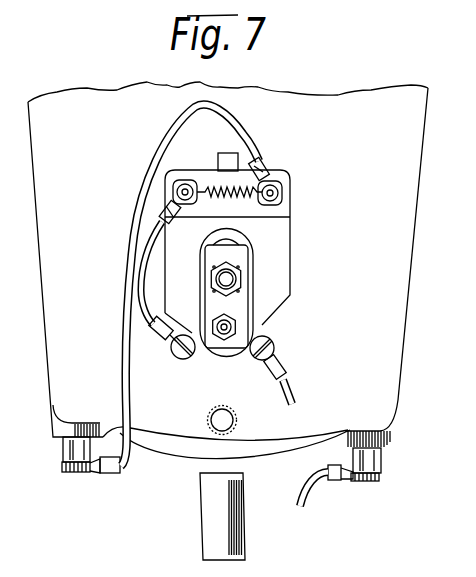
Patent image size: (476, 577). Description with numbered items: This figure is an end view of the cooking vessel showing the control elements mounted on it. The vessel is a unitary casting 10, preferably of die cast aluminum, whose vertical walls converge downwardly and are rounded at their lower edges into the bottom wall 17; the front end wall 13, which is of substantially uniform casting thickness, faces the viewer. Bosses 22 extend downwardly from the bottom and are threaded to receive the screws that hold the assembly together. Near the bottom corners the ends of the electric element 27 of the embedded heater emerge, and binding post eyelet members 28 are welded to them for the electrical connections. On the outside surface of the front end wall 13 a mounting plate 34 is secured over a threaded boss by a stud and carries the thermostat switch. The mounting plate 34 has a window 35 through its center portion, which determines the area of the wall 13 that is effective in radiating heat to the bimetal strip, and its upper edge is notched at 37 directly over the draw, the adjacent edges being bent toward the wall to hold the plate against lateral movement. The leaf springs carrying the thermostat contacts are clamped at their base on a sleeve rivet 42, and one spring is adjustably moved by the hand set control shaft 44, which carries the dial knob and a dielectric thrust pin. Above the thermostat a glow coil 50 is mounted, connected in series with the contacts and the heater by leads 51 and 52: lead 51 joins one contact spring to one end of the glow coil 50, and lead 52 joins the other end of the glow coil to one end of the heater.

The unitary casting 10 is at (433, 146).
The front end wall 13 is at (393, 200).
The bottom wall 17 is at (263, 457).
The bosses 22 is at (203, 507).
The electric element ends 27 is at (87, 471).
The binding post eyelet members 28 is at (73, 470).
The mounting plate 34 is at (278, 232).
The window 35 is at (252, 268).
The notch 37 is at (238, 152).
The sleeve rivet 42 is at (240, 329).
The hand set control shaft 44 is at (243, 289).
The glow coil 50 is at (240, 181).
The lead 51 is at (143, 264).
The lead 52 is at (130, 213).